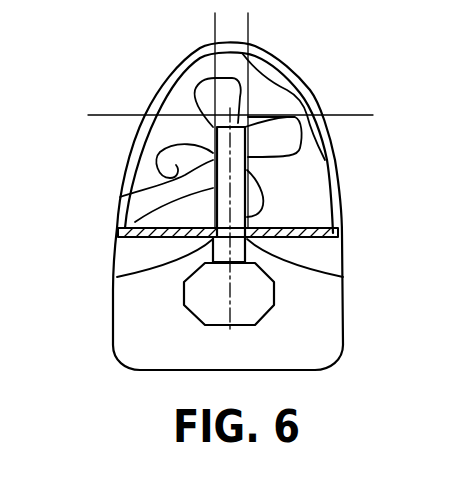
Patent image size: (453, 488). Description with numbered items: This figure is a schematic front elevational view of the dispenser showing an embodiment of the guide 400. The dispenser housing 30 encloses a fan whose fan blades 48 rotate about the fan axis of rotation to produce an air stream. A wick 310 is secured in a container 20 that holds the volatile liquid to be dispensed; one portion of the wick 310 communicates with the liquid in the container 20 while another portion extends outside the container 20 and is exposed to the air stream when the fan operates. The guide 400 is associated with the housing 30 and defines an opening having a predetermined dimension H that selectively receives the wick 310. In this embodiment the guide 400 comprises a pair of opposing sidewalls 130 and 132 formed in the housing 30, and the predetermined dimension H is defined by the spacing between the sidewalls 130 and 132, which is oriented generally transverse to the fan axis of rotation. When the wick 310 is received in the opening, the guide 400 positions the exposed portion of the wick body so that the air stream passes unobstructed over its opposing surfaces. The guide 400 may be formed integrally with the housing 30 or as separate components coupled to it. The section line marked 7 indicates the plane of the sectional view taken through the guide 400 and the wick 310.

The housing 30 is at (153, 91).
The fan blades 48 is at (120, 197).
The wick 310 is at (118, 231).
The container 20 is at (210, 306).
The sidewall 130 is at (130, 274).
The sidewall 132 is at (343, 273).
The guide 400 is at (422, 218).
The section line 7 is at (373, 135).
The predetermined dimension H is at (163, 20).